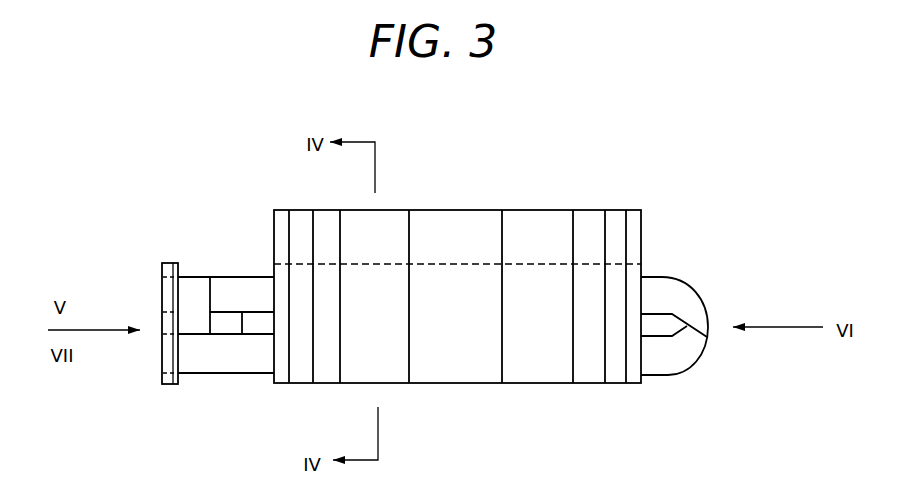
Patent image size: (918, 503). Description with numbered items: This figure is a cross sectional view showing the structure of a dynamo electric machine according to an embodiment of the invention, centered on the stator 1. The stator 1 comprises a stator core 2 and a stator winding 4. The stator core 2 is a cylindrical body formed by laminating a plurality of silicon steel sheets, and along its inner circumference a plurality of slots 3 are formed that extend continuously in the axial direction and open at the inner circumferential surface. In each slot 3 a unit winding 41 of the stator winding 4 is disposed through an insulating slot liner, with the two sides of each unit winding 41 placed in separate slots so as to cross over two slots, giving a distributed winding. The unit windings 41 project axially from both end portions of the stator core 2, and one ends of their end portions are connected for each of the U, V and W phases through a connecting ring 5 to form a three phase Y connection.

The stator 1 is at (430, 210).
The stator core 2 is at (523, 223).
The slot 3 is at (597, 303).
The stator winding 4 is at (690, 282).
The unit winding 41 is at (698, 313).
The connecting ring 5 is at (163, 290).